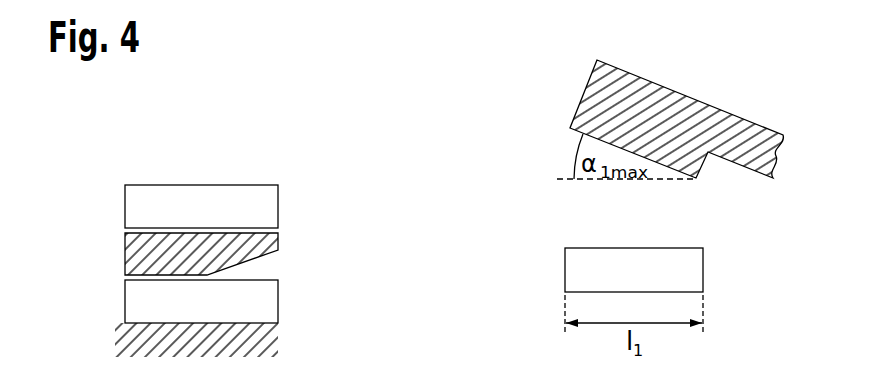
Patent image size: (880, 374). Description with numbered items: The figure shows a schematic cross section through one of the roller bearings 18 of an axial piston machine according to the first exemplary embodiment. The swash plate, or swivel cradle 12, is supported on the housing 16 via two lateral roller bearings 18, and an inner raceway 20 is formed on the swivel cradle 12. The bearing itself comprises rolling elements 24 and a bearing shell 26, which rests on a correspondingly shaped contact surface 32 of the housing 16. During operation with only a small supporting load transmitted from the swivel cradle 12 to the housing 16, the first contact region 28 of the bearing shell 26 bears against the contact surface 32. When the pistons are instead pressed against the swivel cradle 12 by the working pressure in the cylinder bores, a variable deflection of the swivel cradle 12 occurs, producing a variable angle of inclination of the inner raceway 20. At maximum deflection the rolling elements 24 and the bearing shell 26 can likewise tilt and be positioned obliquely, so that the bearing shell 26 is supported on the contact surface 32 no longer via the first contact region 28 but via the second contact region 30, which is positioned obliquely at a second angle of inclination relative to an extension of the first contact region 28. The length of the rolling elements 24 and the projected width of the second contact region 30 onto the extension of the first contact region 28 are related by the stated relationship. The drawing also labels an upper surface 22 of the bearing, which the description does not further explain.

The swivel cradle 12 is at (666, 119).
The housing 16 is at (148, 308).
The roller bearing 18 is at (97, 172).
The inner raceway 20 is at (574, 131).
The upper surface 22 is at (241, 233).
The rolling elements 24 is at (184, 223).
The bearing shell 26 is at (141, 257).
The first contact region 28 is at (153, 280).
The second contact region 30 is at (259, 253).
The contact surface 32 is at (167, 276).